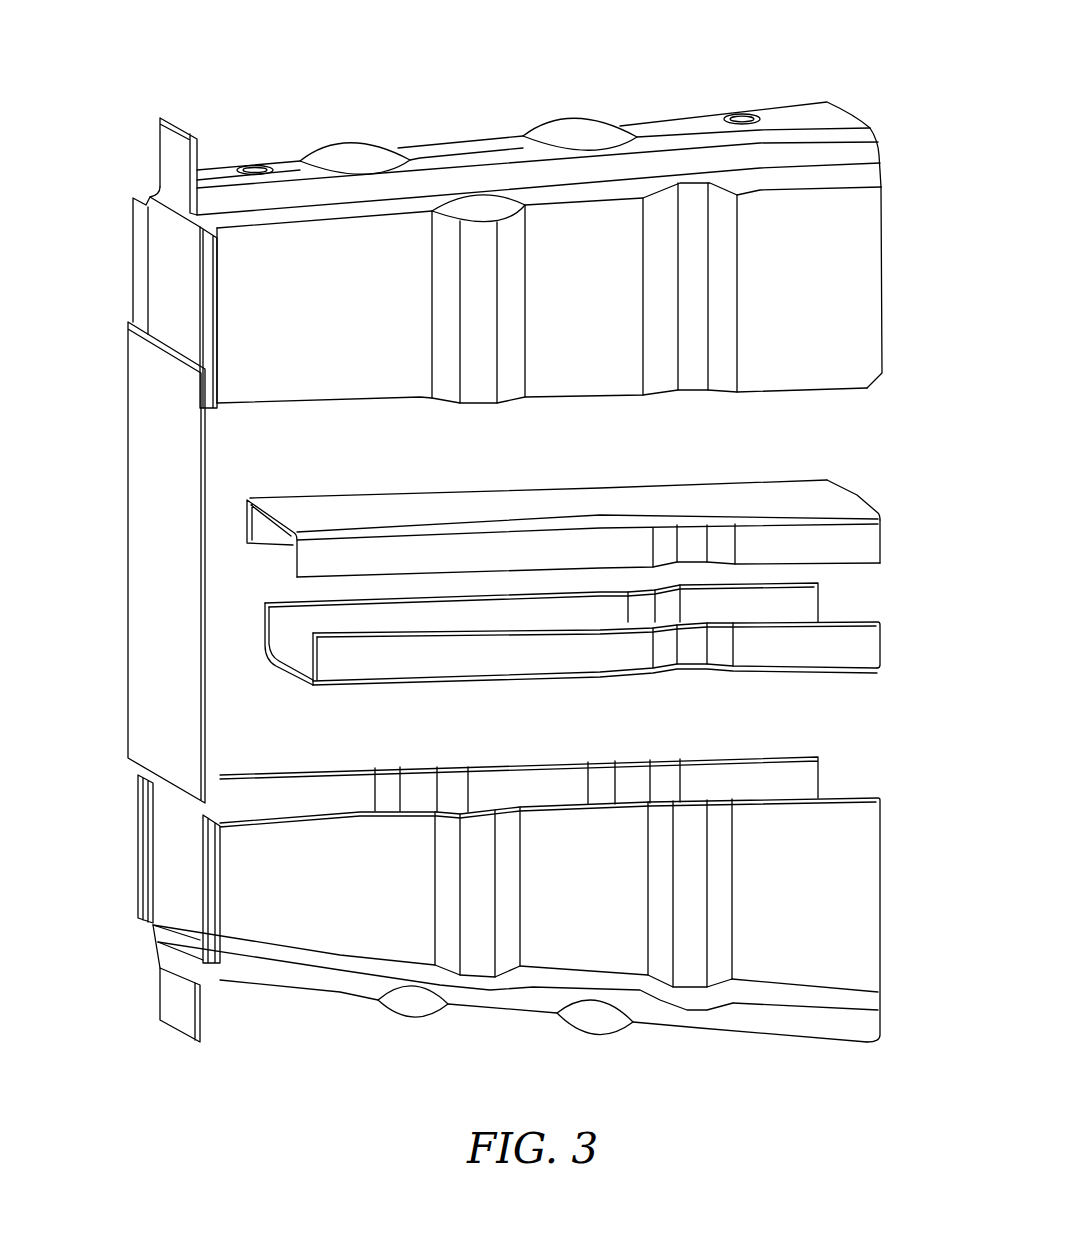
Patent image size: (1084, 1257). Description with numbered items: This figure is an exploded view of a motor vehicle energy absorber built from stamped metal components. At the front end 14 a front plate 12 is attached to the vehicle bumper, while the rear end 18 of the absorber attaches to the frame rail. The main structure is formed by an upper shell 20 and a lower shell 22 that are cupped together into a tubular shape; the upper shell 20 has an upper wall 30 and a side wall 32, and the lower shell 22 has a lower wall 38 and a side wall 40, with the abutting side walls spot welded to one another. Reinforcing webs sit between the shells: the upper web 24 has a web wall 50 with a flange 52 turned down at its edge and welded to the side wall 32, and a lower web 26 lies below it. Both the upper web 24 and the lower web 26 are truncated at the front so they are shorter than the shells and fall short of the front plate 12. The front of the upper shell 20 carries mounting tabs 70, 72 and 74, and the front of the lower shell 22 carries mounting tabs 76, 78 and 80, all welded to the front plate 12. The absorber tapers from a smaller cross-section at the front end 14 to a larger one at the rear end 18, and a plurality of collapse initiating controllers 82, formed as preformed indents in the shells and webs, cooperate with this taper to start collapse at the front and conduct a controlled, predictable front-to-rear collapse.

The front plate 12 is at (145, 455).
The front end 14 is at (220, 170).
The rear end 18 is at (794, 113).
The upper shell 20 is at (470, 147).
The lower shell 22 is at (575, 920).
The upper web 24 is at (515, 505).
The lower web 26 is at (590, 657).
The upper wall 30 is at (277, 167).
The side wall 32 is at (863, 245).
The lower wall 38 is at (333, 990).
The side wall 40 is at (843, 908).
The web wall 50 is at (802, 495).
The flange 52 is at (858, 543).
The mounting tab 70 is at (133, 245).
The mounting tab 72 is at (160, 150).
The mounting tab 74 is at (220, 347).
The mounting tab 76 is at (133, 848).
The mounting tab 78 is at (173, 1035).
The mounting tab 80 is at (223, 907).
The collapse initiating controller 82 is at (347, 153).